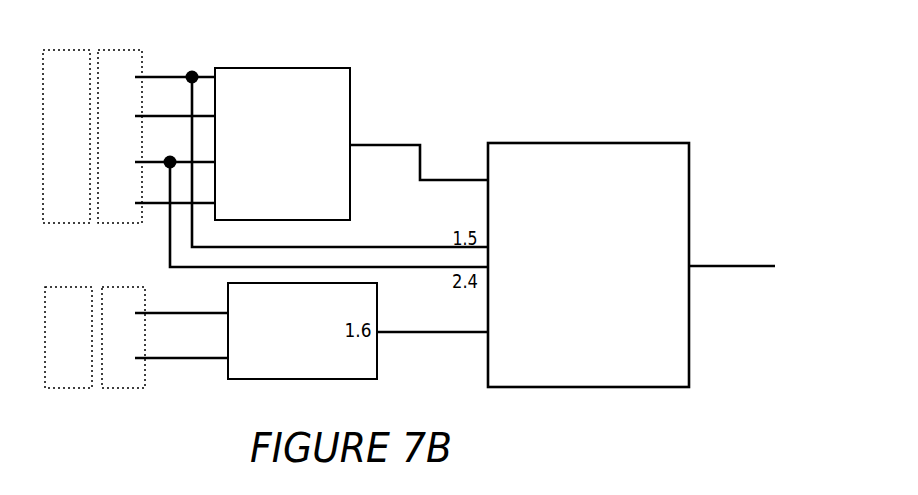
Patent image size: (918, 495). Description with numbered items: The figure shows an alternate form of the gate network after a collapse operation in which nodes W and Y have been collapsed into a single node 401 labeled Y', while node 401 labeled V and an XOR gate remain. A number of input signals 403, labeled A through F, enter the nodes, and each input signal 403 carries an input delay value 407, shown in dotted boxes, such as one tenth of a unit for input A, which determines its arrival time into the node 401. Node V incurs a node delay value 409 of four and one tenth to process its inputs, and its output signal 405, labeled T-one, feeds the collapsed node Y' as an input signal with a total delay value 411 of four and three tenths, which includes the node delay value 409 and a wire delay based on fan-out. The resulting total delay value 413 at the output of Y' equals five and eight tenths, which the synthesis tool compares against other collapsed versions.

The node 401 is at (282, 68).
The input signal 403 is at (118, 50).
The output signal 405 is at (417, 118).
The input delay value 407 is at (67, 50).
The node delay value 409 is at (310, 141).
The total delay value 411 is at (468, 157).
The total delay value 413 is at (712, 244).